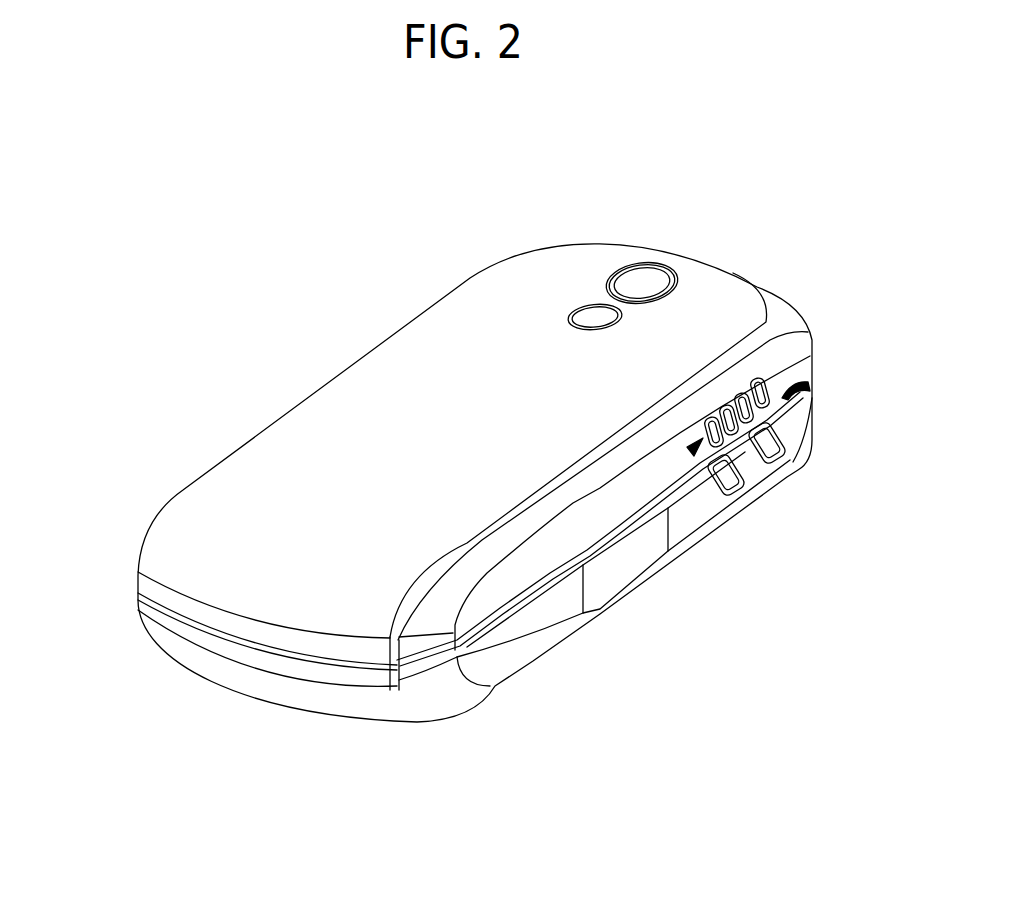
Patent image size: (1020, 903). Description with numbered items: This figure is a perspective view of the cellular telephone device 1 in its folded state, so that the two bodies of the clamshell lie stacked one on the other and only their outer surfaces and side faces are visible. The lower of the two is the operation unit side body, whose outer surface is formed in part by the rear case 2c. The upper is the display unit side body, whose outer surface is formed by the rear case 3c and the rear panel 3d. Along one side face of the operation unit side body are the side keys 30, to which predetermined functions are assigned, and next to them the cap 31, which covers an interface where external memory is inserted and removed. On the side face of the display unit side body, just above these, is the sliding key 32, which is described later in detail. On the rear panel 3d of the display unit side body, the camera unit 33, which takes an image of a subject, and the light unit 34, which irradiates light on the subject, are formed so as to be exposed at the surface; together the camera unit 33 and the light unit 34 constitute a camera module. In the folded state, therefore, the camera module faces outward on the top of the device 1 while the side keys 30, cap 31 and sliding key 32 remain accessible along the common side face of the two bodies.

The cellular telephone device 1 is at (796, 227).
The rear case 2c is at (308, 696).
The rear case 3c is at (783, 320).
The rear panel 3d is at (193, 512).
The side keys 30 is at (727, 484).
The cap 31 is at (633, 563).
The sliding key 32 is at (690, 452).
The camera unit 33 is at (640, 283).
The light unit 34 is at (595, 317).